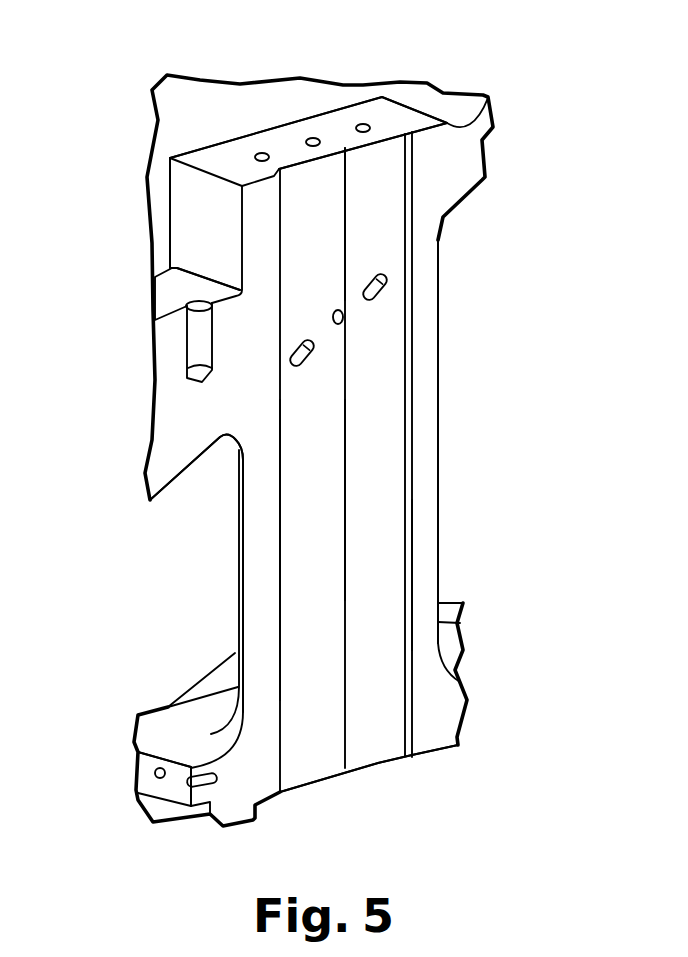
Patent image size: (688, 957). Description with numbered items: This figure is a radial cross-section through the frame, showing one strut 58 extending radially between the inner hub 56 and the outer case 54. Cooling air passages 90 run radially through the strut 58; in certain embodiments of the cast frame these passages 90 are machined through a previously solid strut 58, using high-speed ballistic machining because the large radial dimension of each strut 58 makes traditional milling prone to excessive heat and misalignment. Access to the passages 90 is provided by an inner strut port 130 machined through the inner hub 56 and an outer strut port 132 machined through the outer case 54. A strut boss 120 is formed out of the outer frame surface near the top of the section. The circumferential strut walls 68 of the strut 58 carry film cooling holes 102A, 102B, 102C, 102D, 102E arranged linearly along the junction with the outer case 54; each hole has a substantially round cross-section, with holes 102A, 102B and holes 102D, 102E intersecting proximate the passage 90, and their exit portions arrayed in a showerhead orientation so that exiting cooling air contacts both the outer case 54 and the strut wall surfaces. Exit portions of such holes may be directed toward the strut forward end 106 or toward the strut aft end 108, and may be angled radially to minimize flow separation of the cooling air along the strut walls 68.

The outer case 54 is at (143, 293).
The inner hub 56 is at (153, 733).
The strut 58 is at (457, 462).
The circumferential strut wall 68 is at (265, 590).
The cooling air passage 90 is at (332, 508).
The film cooling hole 102A is at (316, 353).
The film cooling hole 102B is at (302, 353).
The film cooling hole 102C is at (343, 317).
The film cooling hole 102D is at (388, 284).
The film cooling hole 102E is at (375, 287).
The strut forward end 106 is at (242, 532).
The strut aft end 108 is at (438, 499).
The strut boss 120 is at (260, 140).
The inner strut port 130 is at (380, 763).
The outer strut port 132 is at (378, 154).